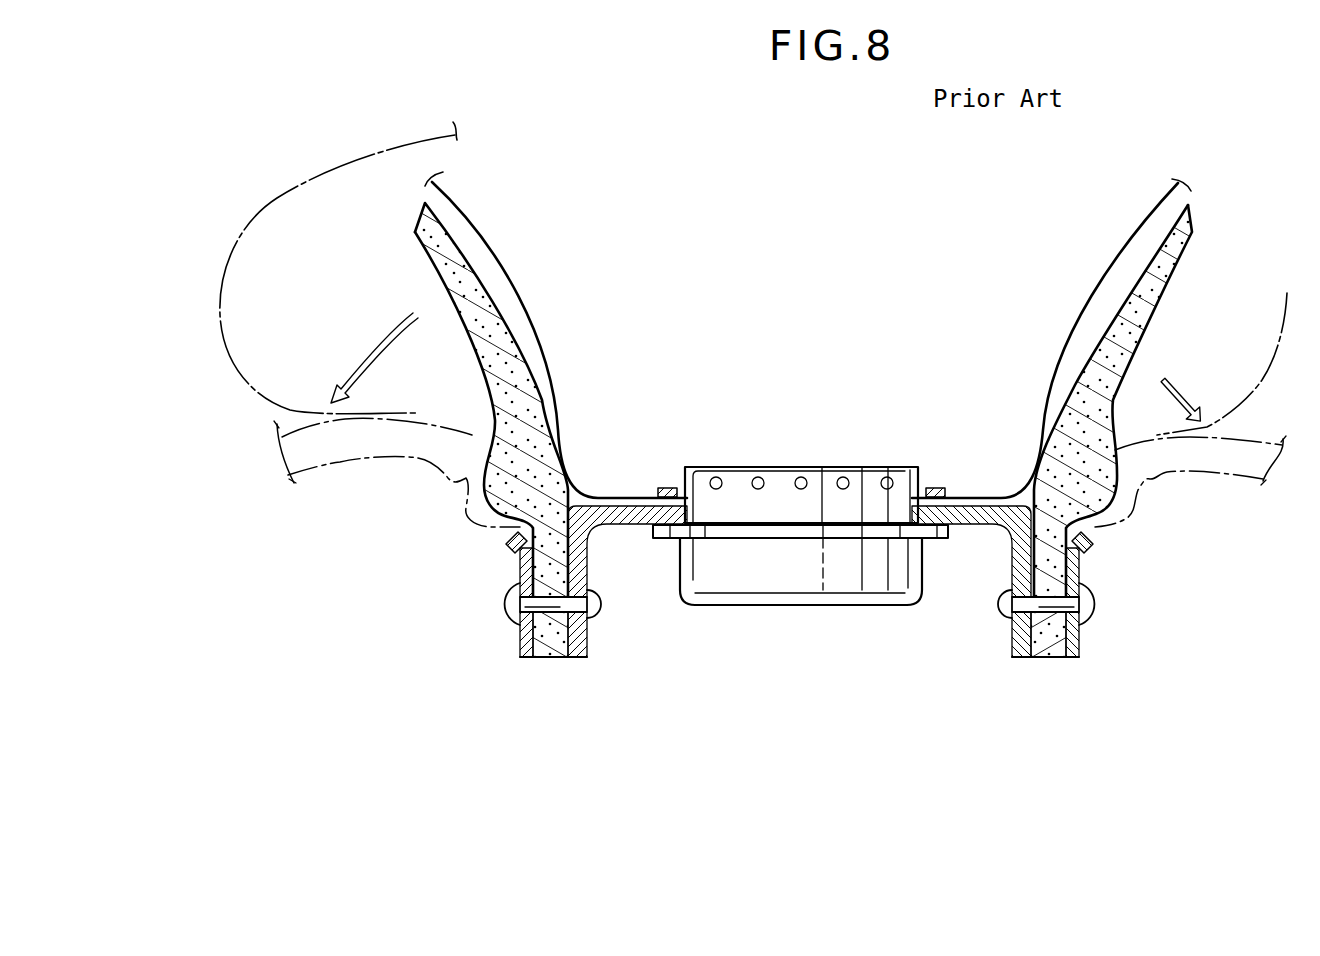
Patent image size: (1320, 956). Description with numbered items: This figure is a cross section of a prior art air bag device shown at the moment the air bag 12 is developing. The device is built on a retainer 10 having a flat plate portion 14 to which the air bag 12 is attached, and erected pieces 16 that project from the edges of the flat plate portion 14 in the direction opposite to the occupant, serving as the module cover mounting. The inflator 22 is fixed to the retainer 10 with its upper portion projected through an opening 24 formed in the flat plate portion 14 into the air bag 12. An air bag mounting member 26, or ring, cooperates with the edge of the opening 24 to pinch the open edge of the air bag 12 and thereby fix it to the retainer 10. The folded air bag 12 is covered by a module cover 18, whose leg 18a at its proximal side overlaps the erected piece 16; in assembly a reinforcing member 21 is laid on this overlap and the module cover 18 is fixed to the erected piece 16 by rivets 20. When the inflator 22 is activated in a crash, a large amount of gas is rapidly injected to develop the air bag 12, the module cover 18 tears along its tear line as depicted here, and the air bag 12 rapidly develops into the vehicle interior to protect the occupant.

The retainer 10 is at (622, 527).
The air bag 12 is at (482, 232).
The flat plate portion 14 is at (987, 528).
The erected piece 16 is at (589, 639).
The module cover 18 is at (467, 320).
The leg 18a is at (548, 660).
The rivets 20 is at (505, 607).
The reinforcing member 21 is at (513, 560).
The inflator 22 is at (870, 465).
The opening 24 is at (702, 508).
The air bag mounting member 26 is at (664, 486).